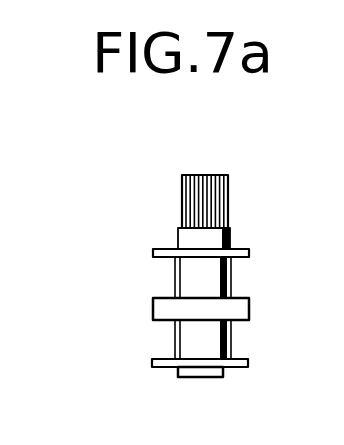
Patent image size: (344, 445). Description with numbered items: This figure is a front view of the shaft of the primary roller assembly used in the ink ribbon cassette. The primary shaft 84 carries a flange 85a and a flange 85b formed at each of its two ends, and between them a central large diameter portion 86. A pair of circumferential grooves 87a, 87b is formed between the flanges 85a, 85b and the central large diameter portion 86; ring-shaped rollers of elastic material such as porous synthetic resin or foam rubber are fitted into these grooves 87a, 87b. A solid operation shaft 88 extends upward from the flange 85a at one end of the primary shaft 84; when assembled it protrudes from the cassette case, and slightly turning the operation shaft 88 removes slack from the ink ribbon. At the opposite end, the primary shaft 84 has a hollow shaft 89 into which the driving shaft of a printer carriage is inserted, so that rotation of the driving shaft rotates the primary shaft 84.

The shaft 84 is at (168, 192).
The operation shaft 88 is at (181, 177).
The flange 85a is at (163, 250).
The circumferential groove 87a is at (175, 275).
The central large diameter portion 86 is at (153, 308).
The circumferential groove 87b is at (175, 347).
The flange 85b is at (158, 378).
The hollow shaft 89 is at (207, 377).